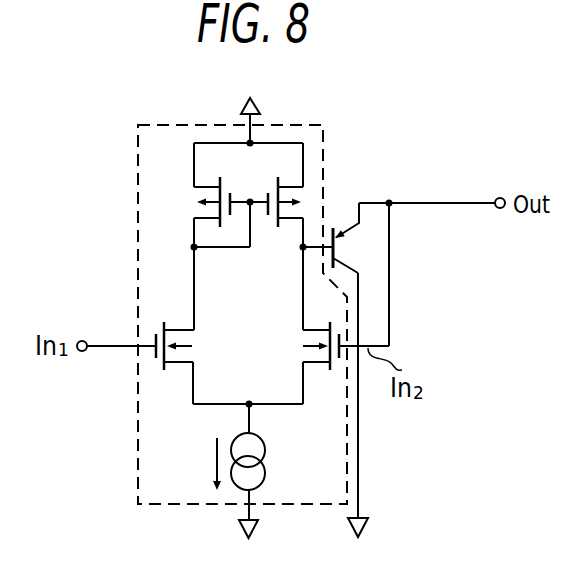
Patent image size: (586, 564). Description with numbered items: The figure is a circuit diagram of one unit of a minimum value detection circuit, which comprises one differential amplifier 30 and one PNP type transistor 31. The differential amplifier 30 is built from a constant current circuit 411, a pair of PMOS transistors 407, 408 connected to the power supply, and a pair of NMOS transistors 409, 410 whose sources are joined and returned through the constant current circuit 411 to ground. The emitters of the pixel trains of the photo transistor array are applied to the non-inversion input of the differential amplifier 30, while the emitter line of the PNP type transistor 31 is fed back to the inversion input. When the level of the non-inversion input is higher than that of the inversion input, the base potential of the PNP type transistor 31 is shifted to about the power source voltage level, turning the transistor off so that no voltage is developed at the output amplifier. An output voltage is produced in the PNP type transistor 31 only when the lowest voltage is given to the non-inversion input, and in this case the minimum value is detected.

The differential amplifier 30 is at (327, 150).
The PNP type transistor 31 is at (340, 244).
The PMOS transistor 407 is at (195, 206).
The PMOS transistor 408 is at (307, 205).
The NMOS transistor 409 is at (175, 318).
The NMOS transistor 410 is at (320, 318).
The constant current circuit 411 is at (265, 454).